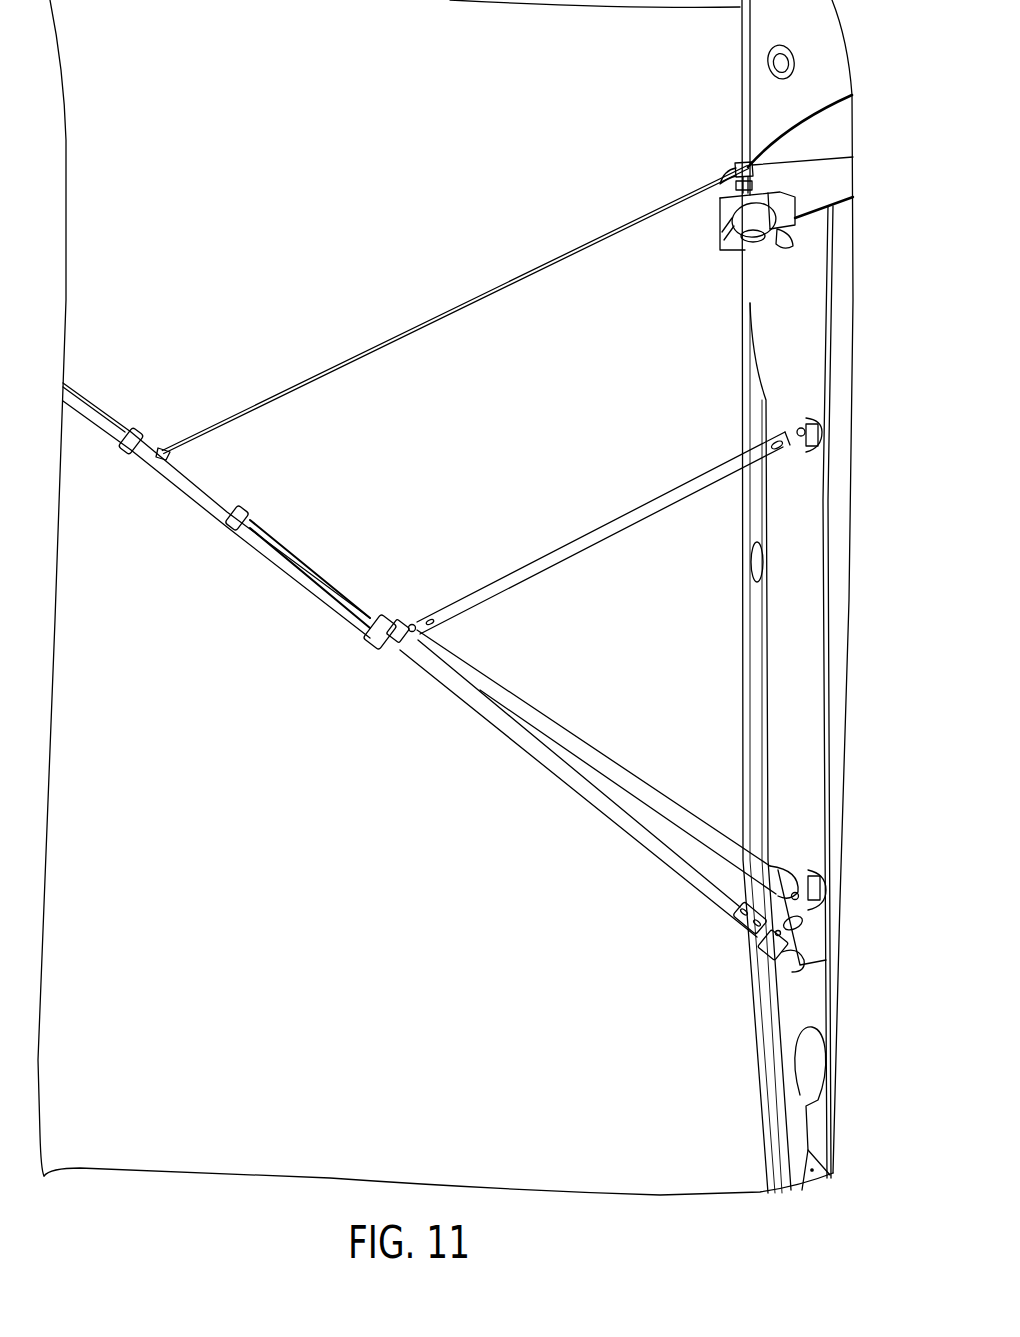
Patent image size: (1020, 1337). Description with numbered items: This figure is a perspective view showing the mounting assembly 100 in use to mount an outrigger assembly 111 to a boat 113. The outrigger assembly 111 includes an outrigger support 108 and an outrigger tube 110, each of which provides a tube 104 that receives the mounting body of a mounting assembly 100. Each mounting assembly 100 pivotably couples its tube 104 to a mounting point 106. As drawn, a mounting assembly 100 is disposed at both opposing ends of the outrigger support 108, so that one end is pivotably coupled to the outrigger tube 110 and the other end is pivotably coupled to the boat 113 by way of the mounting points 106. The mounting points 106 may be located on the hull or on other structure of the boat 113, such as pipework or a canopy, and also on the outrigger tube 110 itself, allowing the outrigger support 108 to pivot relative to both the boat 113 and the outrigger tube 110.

The mounting assembly 100 is at (791, 411).
The tube 104 is at (430, 660).
The mounting point 106 is at (815, 452).
The outrigger support 108 is at (536, 558).
The outrigger tube 110 is at (546, 711).
The outrigger assembly 111 is at (305, 218).
The boat 113 is at (836, 290).